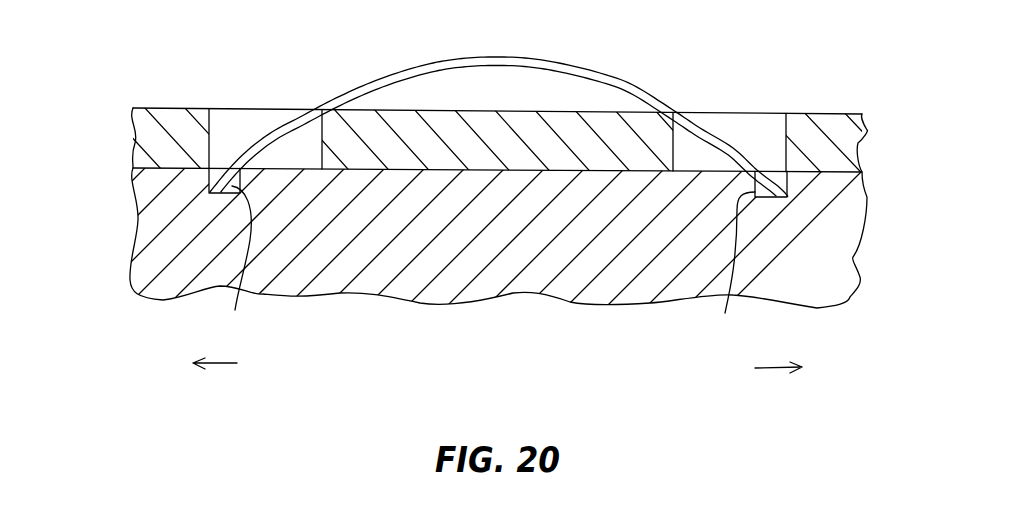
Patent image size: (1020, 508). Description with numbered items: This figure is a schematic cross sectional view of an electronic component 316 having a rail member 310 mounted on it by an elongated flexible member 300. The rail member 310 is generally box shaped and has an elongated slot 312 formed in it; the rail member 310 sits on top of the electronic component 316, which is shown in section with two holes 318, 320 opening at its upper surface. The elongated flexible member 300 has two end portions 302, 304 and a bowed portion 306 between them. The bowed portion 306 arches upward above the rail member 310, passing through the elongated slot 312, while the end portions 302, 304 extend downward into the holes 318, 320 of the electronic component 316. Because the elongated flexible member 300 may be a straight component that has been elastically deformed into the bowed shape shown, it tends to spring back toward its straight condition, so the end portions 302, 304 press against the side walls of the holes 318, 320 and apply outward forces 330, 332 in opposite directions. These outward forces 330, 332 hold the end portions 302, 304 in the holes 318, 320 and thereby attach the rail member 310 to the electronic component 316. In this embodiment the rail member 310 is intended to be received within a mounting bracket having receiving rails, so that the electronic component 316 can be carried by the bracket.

The elongated flexible member 300 is at (499, 98).
The end portion 302 is at (212, 172).
The end portion 304 is at (785, 178).
The bowed portion 306 is at (467, 22).
The rail member 310 is at (166, 102).
The elongated slot 312 is at (253, 123).
The electronic component 316 is at (133, 242).
The hole 318 is at (237, 267).
The hole 320 is at (728, 270).
The outward force 330 is at (223, 363).
The outward force 332 is at (766, 368).